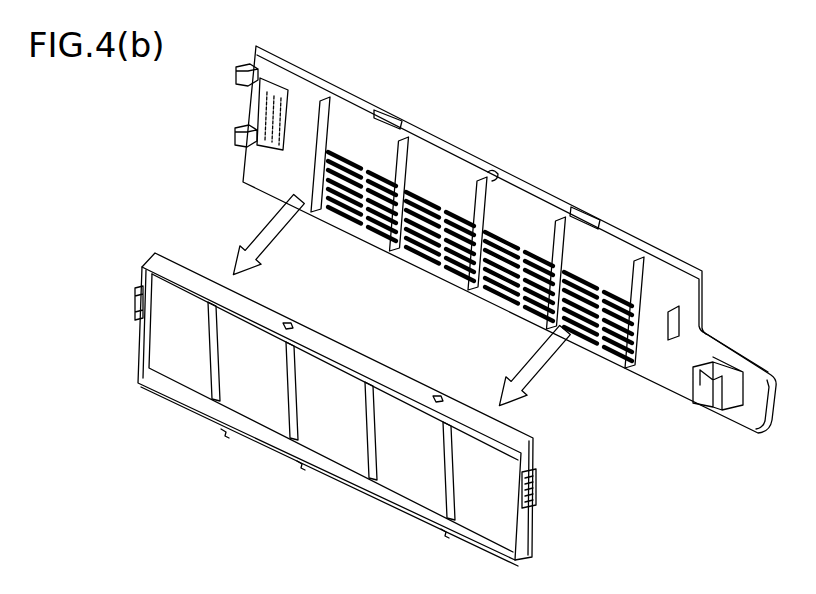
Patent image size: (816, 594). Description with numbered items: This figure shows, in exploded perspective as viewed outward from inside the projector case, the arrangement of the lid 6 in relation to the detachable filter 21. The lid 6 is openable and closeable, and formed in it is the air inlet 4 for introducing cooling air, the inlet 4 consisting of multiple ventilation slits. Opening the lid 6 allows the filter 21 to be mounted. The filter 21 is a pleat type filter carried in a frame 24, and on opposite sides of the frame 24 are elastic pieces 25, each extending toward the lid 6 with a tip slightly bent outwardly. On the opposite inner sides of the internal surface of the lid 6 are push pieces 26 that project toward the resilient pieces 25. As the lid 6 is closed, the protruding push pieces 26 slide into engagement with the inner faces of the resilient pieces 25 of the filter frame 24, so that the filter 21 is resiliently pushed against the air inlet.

The lid 6 is at (473, 148).
The air inlet 4 is at (444, 263).
The push pieces 26 is at (298, 112).
The filter 21 is at (152, 252).
The frame 24 is at (138, 349).
The elastic pieces 25 is at (136, 290).